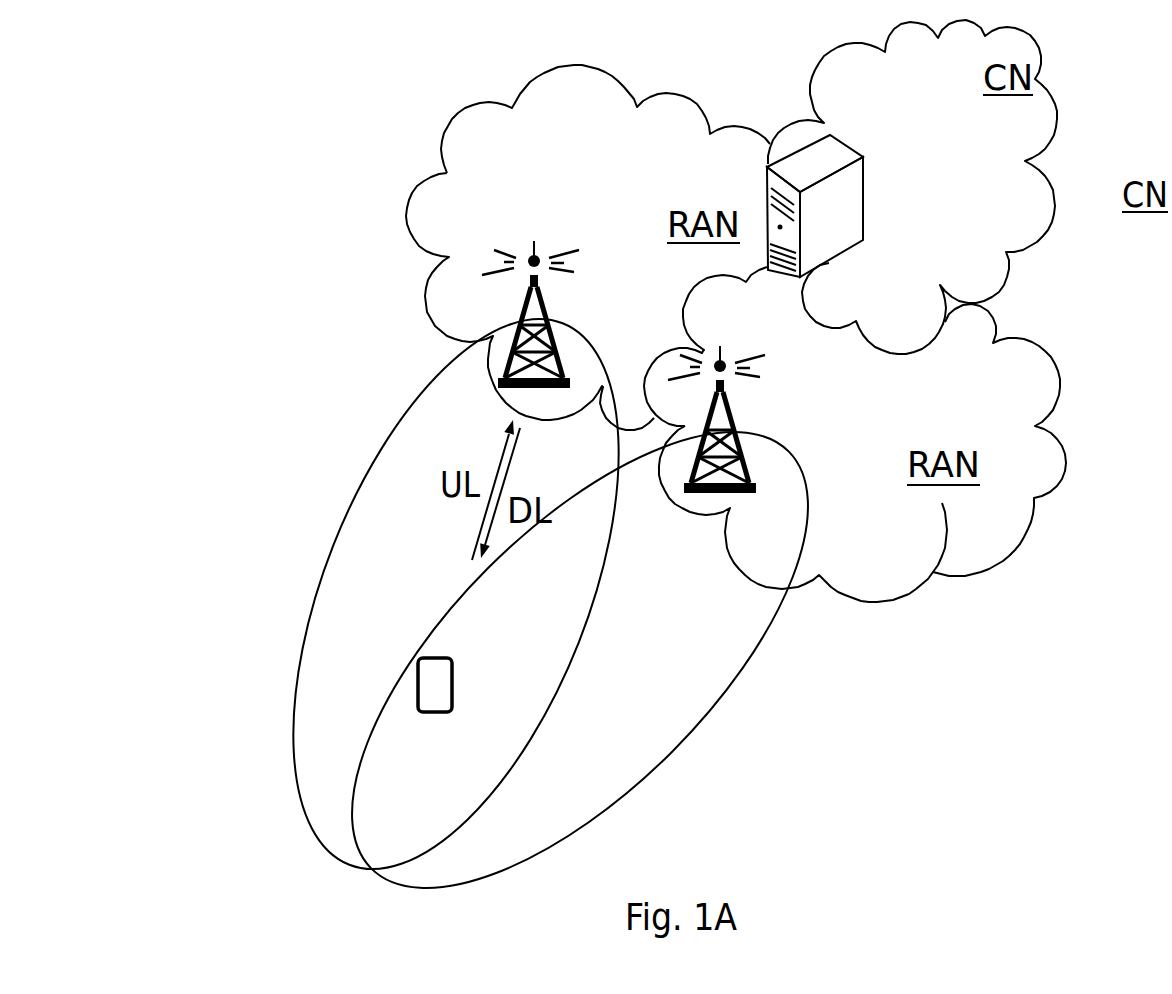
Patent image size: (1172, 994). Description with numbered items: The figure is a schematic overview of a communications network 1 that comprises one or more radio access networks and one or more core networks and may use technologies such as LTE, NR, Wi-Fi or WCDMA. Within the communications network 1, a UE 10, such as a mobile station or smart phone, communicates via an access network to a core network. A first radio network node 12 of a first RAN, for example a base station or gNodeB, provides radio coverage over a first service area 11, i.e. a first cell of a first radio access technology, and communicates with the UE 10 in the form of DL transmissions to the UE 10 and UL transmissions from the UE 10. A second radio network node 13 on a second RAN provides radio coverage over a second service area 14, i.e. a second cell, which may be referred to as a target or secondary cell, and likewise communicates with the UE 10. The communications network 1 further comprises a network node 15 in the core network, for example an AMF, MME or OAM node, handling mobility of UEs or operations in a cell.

The communications network 1 is at (350, 165).
The UE 10 is at (418, 666).
The first service area 11 is at (343, 762).
The first radio network node 12 is at (551, 314).
The second radio network node 13 is at (744, 419).
The second service area 14 is at (580, 791).
The network node 15 is at (839, 158).